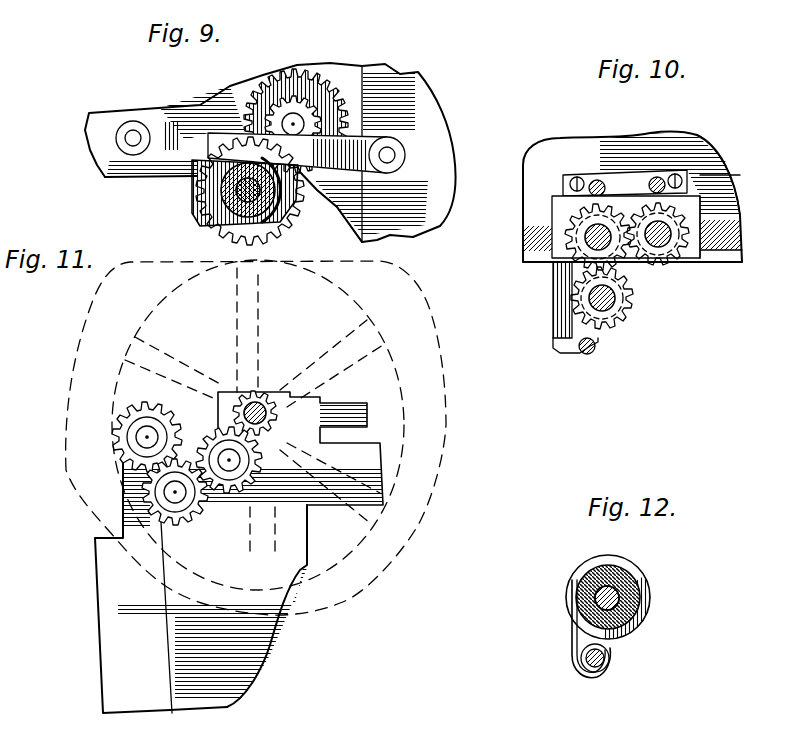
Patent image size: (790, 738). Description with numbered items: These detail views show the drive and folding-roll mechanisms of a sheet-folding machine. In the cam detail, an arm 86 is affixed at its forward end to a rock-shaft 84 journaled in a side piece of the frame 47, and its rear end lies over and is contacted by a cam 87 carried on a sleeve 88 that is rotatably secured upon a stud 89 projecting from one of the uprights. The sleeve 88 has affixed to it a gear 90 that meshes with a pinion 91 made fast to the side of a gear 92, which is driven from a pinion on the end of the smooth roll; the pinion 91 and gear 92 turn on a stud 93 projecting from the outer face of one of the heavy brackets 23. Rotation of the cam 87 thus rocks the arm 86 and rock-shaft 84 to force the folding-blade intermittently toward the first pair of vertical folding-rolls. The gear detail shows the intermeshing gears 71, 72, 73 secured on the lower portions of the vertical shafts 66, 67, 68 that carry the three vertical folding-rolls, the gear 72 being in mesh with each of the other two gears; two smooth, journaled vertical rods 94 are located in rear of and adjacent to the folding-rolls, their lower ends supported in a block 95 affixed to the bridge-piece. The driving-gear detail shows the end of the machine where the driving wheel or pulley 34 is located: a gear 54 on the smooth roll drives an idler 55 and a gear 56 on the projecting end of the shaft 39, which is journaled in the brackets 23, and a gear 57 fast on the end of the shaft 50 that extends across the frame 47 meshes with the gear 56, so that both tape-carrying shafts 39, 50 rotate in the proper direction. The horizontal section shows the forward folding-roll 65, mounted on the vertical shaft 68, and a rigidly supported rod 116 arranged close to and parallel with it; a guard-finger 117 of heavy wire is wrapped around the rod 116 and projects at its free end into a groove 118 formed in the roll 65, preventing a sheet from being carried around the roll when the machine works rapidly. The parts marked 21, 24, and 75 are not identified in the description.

In FIG. 9, the lever arm 21 is at (112, 122).
In FIG. 9, the brackets 23 is at (350, 208).
In FIG. 11, the brackets 23 is at (252, 648).
In FIG. 11, the rod 24 is at (340, 412).
In FIG. 11, the driving wheel or pulley 34 is at (438, 418).
In FIG. 11, the shaft 39 is at (180, 493).
In FIG. 9, the frame 47 is at (432, 110).
In FIG. 10, the frame 47 is at (523, 241).
In FIG. 11, the frame 47 is at (115, 612).
In FIG. 11, the shaft 50 is at (144, 438).
In FIG. 11, the gear 54 is at (262, 400).
In FIG. 11, the idler 55 is at (222, 436).
In FIG. 11, the gear 56 is at (177, 518).
In FIG. 11, the gear 57 is at (146, 404).
In FIG. 12, the folding-roll 65 is at (637, 584).
In FIG. 10, the vertical shaft 66 is at (659, 243).
In FIG. 10, the vertical shaft 67 is at (592, 230).
In FIG. 10, the vertical shaft 68 is at (608, 306).
In FIG. 12, the vertical shaft 68 is at (596, 574).
In FIG. 10, the gear 71 is at (678, 249).
In FIG. 10, the gear 72 is at (580, 243).
In FIG. 10, the gear 73 is at (631, 305).
In FIG. 10, the casing 75 is at (706, 155).
In FIG. 9, the rock-shaft 84 is at (391, 151).
In FIG. 9, the arm 86 is at (352, 147).
In FIG. 9, the cam 87 is at (208, 220).
In FIG. 9, the sleeve 88 is at (253, 217).
In FIG. 9, the stud 89 is at (213, 186).
In FIG. 9, the gear 90 is at (246, 230).
In FIG. 9, the pinion 91 is at (303, 98).
In FIG. 9, the gear 92 is at (270, 76).
In FIG. 9, the stud 93 is at (296, 122).
In FIG. 10, the vertical rods 94 is at (593, 182).
In FIG. 10, the block 95 is at (616, 183).
In FIG. 10, the rod 116 is at (592, 355).
In FIG. 12, the rod 116 is at (603, 667).
In FIG. 12, the guard-fingers 117 is at (573, 637).
In FIG. 12, the groove 118 is at (623, 563).